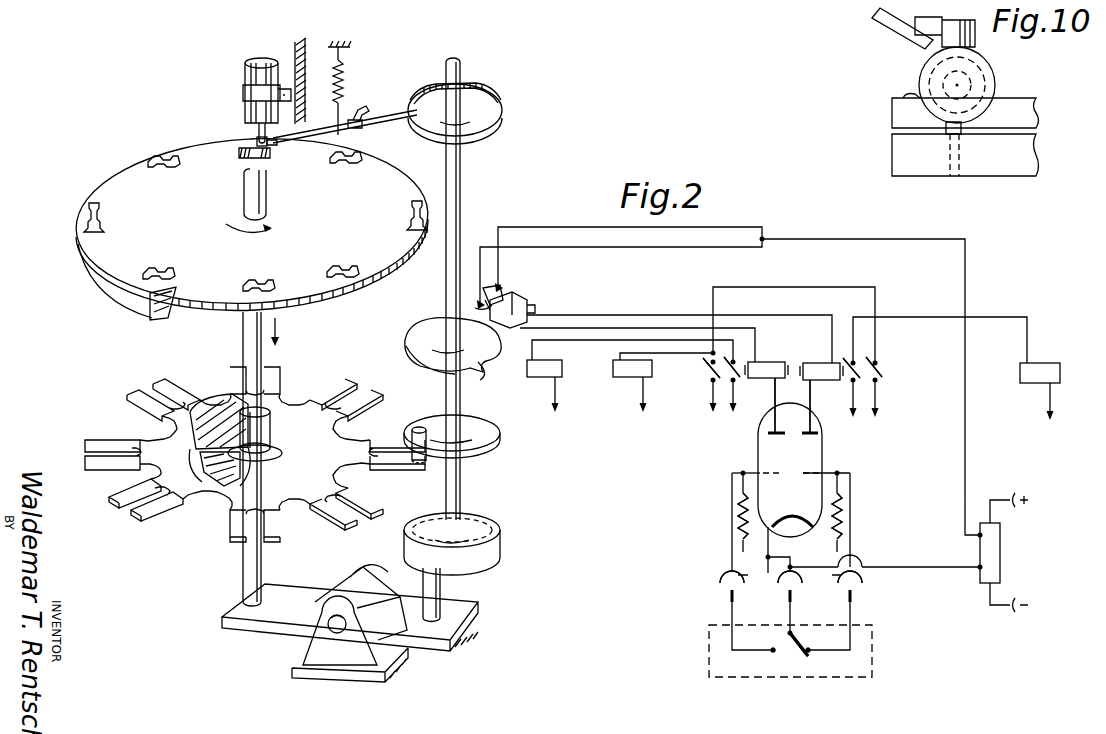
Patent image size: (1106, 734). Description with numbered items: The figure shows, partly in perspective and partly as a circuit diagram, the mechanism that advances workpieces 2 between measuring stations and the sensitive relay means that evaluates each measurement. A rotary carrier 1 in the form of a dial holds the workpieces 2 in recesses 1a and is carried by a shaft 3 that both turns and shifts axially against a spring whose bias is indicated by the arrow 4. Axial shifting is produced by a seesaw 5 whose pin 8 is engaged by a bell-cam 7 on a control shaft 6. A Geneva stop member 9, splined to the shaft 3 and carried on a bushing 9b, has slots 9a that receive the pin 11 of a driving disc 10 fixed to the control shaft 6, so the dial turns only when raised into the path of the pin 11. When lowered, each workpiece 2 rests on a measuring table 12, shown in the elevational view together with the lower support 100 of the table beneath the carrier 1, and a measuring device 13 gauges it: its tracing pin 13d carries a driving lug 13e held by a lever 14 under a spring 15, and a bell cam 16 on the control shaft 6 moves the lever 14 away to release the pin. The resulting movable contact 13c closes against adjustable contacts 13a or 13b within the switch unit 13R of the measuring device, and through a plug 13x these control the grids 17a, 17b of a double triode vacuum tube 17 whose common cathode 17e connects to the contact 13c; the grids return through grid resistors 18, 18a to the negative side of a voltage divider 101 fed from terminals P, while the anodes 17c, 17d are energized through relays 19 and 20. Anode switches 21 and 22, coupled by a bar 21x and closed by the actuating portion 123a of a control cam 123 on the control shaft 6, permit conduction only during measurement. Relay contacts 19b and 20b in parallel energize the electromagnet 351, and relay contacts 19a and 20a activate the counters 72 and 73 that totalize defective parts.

In FIG. 2, the rotary carrier 1 is at (120, 254).
In FIG. 10, the rotary carrier 1 is at (1022, 106).
In FIG. 2, the recesses 1a is at (158, 266).
In FIG. 10, the recesses 1a is at (908, 99).
In FIG. 2, the workpiece 2 is at (247, 151).
In FIG. 10, the workpiece 2 is at (996, 82).
In FIG. 2, the shaft 3 is at (243, 324).
In FIG. 2, the arrow 4 is at (273, 318).
In FIG. 2, the seesaw or lever 5 is at (273, 648).
In FIG. 2, the control shaft 6 is at (462, 186).
In FIG. 2, the bell-cam 7 is at (478, 560).
In FIG. 2, the pin 8 is at (442, 585).
In FIG. 2, the Geneva stop member 9 is at (168, 462).
In FIG. 2, the slots 9a is at (106, 437).
In FIG. 2, the bushing 9b is at (266, 430).
In FIG. 2, the driving disc 10 is at (480, 438).
In FIG. 2, the pin 11 is at (418, 427).
In FIG. 2, the measuring table 12 is at (268, 158).
In FIG. 10, the measuring table 12 is at (946, 128).
In FIG. 2, the measuring device or tracer 13 is at (261, 59).
In FIG. 2, the adjustable stationary contact 13a is at (773, 654).
In FIG. 2, the adjustable stationary contact 13b is at (811, 655).
In FIG. 2, the movable contact 13c is at (802, 643).
In FIG. 2, the tracing pin or plunger 13d is at (256, 139).
In FIG. 10, the tracing pin or plunger 13d is at (975, 42).
In FIG. 2, the driving lug 13e is at (275, 144).
In FIG. 10, the driving lug 13e is at (880, 26).
In FIG. 2, the relay 13R is at (709, 640).
In FIG. 2, the plug or fitting 13x is at (712, 578).
In FIG. 2, the lever 14 is at (374, 119).
In FIG. 2, the spring 15 is at (346, 78).
In FIG. 2, the bell cam 16 is at (482, 108).
In FIG. 2, the double triode vacuum tube 17 is at (750, 446).
In FIG. 2, the grid 17a is at (745, 473).
In FIG. 2, the grid 17b is at (835, 470).
In FIG. 2, the anode 17c is at (770, 430).
In FIG. 2, the anode 17d is at (812, 428).
In FIG. 2, the common cathode 17e is at (793, 520).
In FIG. 2, the grid resistor 18 is at (736, 506).
In FIG. 2, the grid resistor 18a is at (853, 503).
In FIG. 2, the relay 19 is at (770, 362).
In FIG. 2, the relay contact 19a is at (722, 378).
In FIG. 2, the relay contact 19b is at (708, 368).
In FIG. 2, the relay 20 is at (818, 363).
In FIG. 2, the relay contact 20a is at (858, 375).
In FIG. 2, the relay contact 20b is at (878, 372).
In FIG. 2, the anode double switch 21 is at (476, 306).
In FIG. 2, the bar 21x is at (528, 302).
In FIG. 2, the anode double switch 22 is at (500, 289).
In FIG. 2, the counter 72 is at (543, 378).
In FIG. 2, the counter 73 is at (1035, 380).
In FIG. 2, the base plate 100 is at (140, 293).
In FIG. 10, the base plate 100 is at (1020, 159).
In FIG. 2, the voltage divider 101 is at (994, 554).
In FIG. 2, the control disc or cam 123 is at (422, 340).
In FIG. 2, the actuating portion 123a is at (478, 372).
In FIG. 2, the electromagnet 351 is at (620, 378).
In FIG. 2, the terminals P is at (1022, 478).